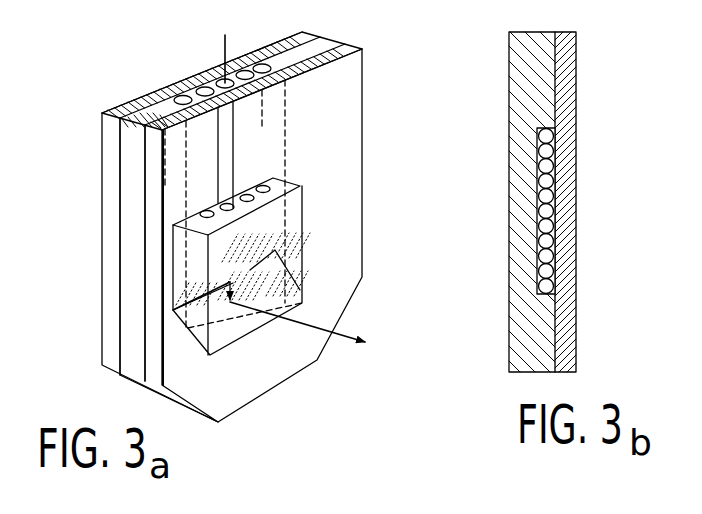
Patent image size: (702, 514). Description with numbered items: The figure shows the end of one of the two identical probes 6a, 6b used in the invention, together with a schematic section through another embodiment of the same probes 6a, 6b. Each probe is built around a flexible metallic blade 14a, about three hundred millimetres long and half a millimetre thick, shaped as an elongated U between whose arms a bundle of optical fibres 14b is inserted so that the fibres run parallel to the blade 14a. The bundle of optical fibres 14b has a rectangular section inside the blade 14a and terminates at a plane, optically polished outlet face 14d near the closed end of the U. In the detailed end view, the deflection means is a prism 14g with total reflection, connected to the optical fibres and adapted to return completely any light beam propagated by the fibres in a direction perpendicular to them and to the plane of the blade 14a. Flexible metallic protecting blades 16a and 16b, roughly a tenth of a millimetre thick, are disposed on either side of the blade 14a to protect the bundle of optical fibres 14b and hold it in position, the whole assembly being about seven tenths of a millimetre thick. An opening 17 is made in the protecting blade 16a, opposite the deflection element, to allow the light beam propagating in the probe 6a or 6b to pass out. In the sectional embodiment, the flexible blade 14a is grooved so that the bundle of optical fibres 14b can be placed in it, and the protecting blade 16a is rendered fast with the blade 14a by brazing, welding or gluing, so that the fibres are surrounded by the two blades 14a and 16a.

In FIG. 3A, the probe 6a is at (221, 219).
In FIG. 3B, the probe 6a is at (524, 231).
In FIG. 3A, the probe 6b is at (86, 118).
In FIG. 3B, the probe 6b is at (498, 378).
In FIG. 3A, the flexible metallic blade 14a is at (133, 327).
In FIG. 3B, the flexible metallic blade 14a is at (513, 88).
In FIG. 3A, the bundle of optical fibres 14b is at (203, 90).
In FIG. 3B, the bundle of optical fibres 14b is at (553, 144).
In FIG. 3A, the outlet face 14d is at (273, 177).
In FIG. 3A, the prism 14g is at (285, 297).
In FIG. 3A, the protecting blade 16a is at (152, 260).
In FIG. 3B, the protecting blade 16a is at (563, 202).
In FIG. 3A, the protecting blade 16b is at (112, 208).
In FIG. 3A, the opening 17 is at (290, 225).